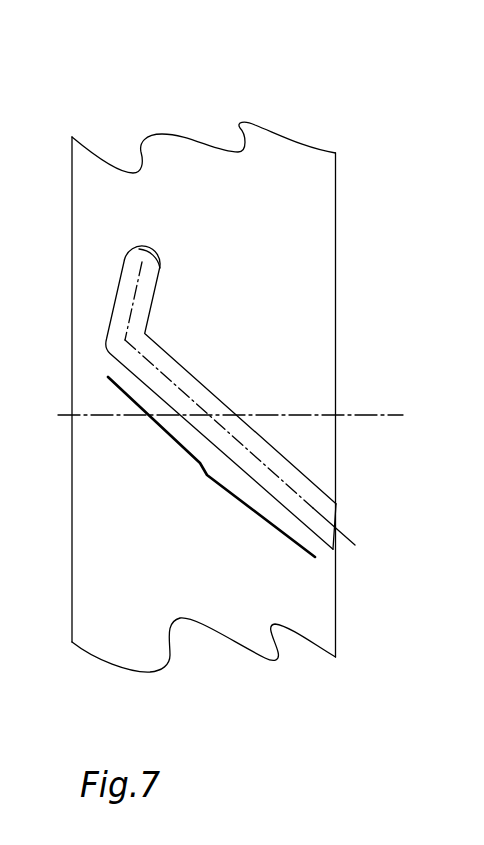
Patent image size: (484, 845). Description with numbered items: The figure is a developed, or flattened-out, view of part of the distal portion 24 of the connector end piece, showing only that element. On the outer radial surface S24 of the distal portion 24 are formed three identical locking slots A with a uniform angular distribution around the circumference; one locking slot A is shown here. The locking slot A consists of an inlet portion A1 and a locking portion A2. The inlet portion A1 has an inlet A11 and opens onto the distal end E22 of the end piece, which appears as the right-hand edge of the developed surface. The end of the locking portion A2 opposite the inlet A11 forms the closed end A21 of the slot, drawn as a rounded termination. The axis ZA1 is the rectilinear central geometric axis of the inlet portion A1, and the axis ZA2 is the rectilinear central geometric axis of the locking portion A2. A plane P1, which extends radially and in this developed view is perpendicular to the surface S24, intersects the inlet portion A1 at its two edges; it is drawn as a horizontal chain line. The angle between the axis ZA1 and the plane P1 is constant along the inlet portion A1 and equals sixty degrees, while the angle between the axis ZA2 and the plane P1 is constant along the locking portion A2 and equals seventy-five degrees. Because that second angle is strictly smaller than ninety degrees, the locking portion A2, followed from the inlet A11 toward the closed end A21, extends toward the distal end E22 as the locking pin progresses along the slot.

The distal portion 24 is at (46, 47).
The outer radial surface S24 is at (287, 172).
The distal end E22 is at (337, 229).
The locking slot A is at (203, 417).
The inlet portion A1 is at (211, 467).
The locking portion A2 is at (88, 328).
The inlet A11 is at (328, 530).
The closed end A21 is at (162, 263).
The central geometric axis of the inlet portion ZA1 is at (277, 473).
The central geometric axis of the locking portion ZA2 is at (138, 292).
The plane P1 is at (217, 400).